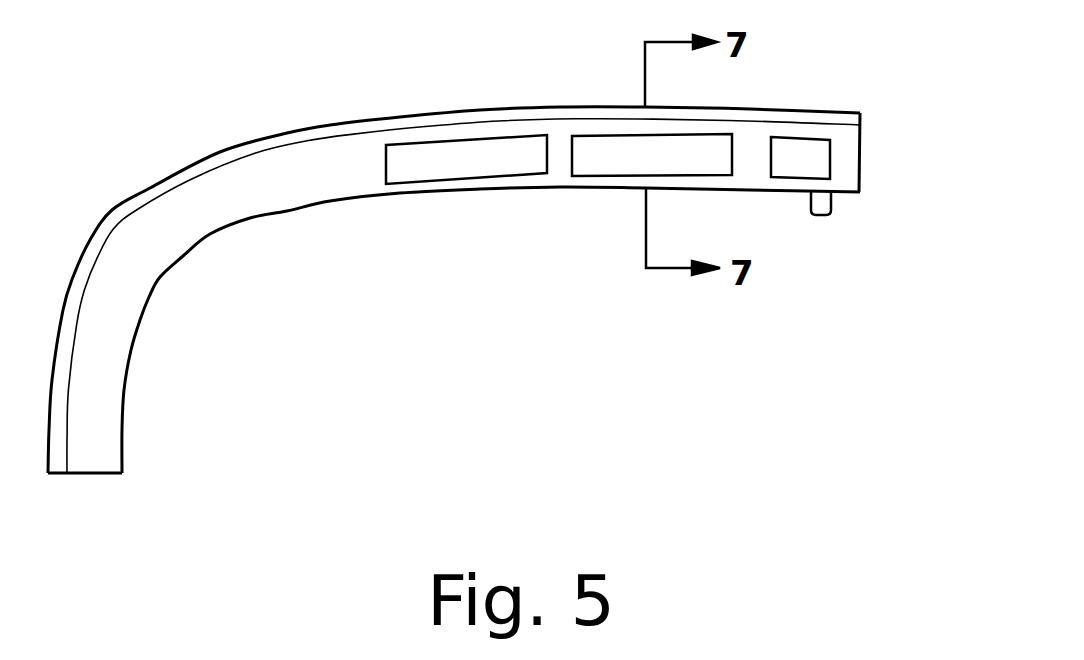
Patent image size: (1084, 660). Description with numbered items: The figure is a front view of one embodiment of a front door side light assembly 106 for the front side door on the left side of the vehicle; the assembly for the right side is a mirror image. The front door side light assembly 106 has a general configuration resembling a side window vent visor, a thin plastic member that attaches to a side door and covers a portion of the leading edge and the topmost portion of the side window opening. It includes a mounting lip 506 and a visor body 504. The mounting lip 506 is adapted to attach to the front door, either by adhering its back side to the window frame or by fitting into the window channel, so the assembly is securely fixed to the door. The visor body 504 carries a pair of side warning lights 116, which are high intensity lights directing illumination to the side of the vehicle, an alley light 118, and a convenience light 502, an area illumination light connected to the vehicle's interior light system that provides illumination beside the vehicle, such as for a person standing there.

The front door side light assembly 106 is at (733, 442).
The side warning lights 116 is at (423, 182).
The alley light 118 is at (830, 155).
The convenience light 502 is at (828, 215).
The visor body 504 is at (130, 360).
The mounting lip 506 is at (402, 113).